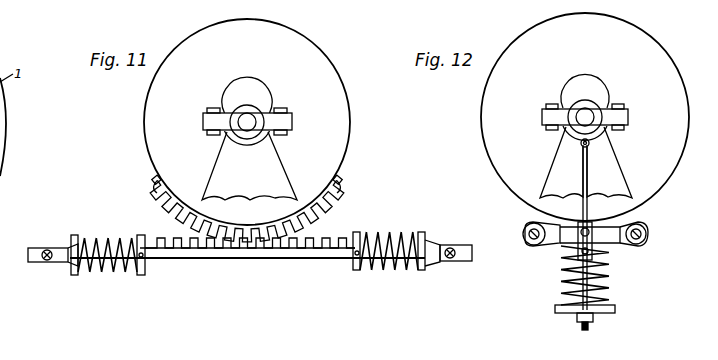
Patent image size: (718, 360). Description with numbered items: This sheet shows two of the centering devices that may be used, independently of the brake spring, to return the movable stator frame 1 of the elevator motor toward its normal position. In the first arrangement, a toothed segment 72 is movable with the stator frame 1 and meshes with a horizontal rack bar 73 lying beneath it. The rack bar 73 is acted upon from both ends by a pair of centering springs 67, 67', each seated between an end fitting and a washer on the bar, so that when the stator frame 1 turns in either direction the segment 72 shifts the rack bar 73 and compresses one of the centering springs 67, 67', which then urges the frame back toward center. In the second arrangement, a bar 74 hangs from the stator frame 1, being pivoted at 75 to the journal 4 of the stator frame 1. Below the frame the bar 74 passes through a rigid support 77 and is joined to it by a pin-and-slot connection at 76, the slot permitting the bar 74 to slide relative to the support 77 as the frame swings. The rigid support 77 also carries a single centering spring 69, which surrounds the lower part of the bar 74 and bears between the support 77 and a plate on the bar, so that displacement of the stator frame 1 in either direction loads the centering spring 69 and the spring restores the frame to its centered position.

In FIG. 11, the stator frame 1 is at (349, 126).
In FIG. 12, the stator frame 1 is at (673, 87).
In FIG. 12, the journal 4 is at (592, 112).
In FIG. 11, the centering spring 67 is at (108, 244).
In FIG. 11, the centering spring 67' is at (389, 267).
In FIG. 12, the centering spring 69 is at (606, 283).
In FIG. 11, the segment 72 is at (345, 203).
In FIG. 11, the rack bar 73 is at (304, 259).
In FIG. 12, the bar 74 is at (590, 172).
In FIG. 12, the pivot 75 is at (582, 146).
In FIG. 12, the pin-and-slot connection 76 is at (592, 232).
In FIG. 12, the rigid support 77 is at (612, 240).